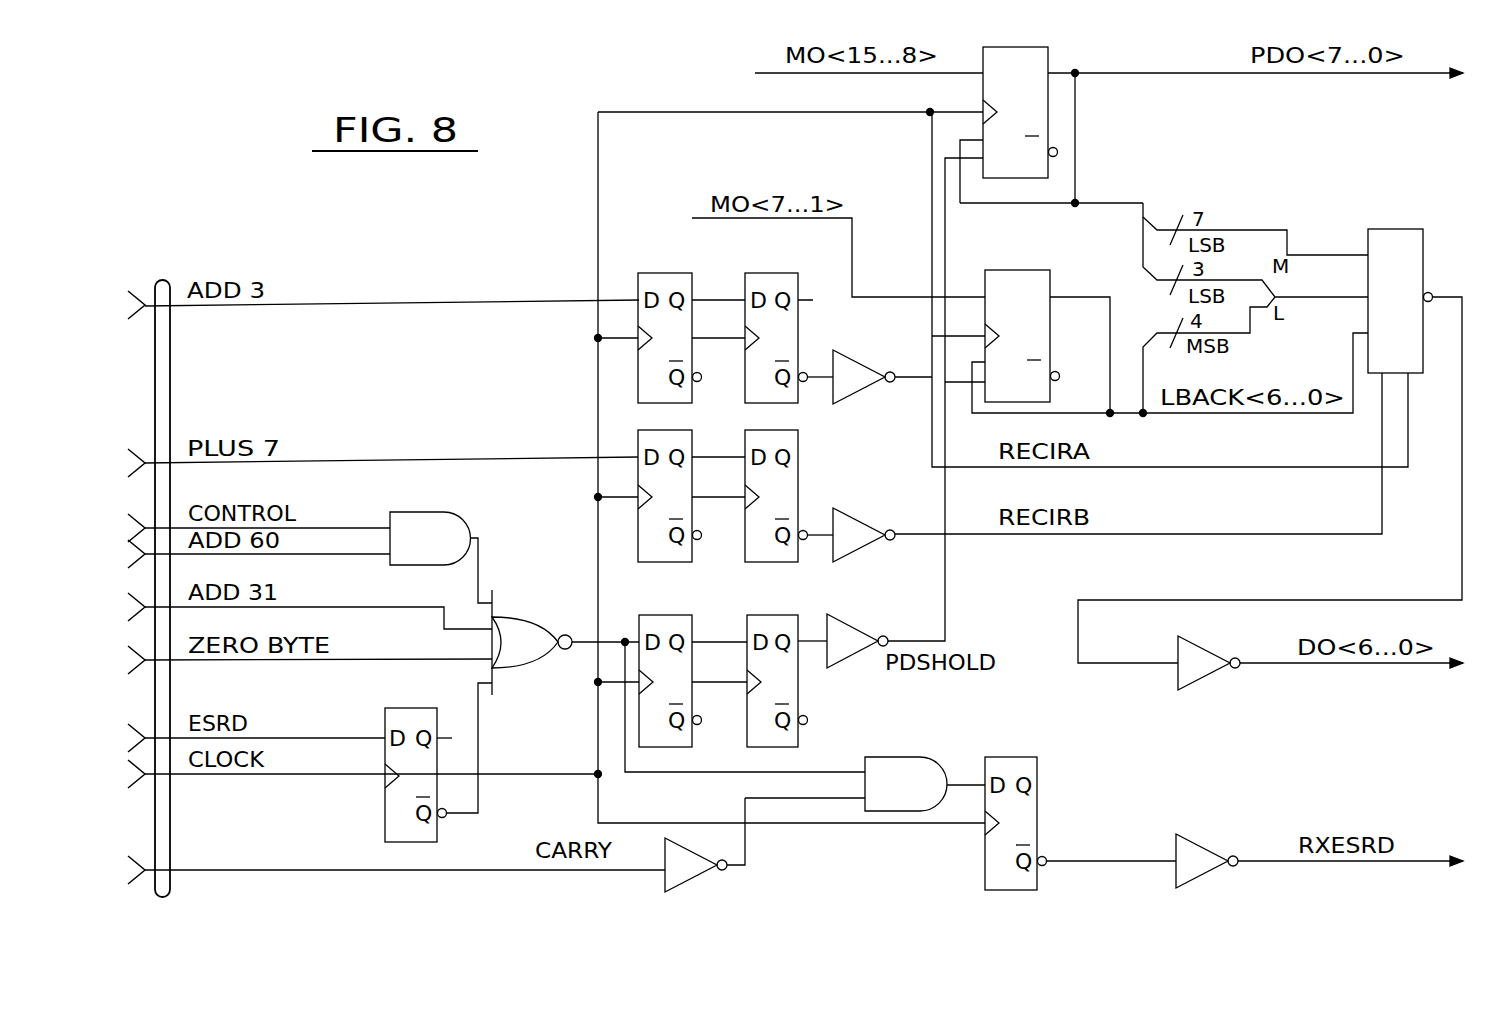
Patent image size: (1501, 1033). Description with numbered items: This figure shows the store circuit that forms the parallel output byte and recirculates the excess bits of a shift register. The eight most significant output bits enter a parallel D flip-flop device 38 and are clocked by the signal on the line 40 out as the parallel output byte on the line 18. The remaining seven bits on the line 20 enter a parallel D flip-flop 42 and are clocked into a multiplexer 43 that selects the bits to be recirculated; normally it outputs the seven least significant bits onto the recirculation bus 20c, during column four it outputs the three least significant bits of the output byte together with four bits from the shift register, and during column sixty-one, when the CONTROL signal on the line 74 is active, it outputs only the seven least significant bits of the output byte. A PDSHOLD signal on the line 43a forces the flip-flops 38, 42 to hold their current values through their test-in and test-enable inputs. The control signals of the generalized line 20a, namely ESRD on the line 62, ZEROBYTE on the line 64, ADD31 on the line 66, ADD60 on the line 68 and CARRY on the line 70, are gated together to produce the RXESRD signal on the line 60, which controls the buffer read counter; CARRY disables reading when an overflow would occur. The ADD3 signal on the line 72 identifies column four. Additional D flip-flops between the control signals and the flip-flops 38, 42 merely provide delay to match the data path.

The recirculation control signal line 20a is at (170, 282).
The ADD3 signal line 72 is at (477, 304).
The CONTROL signal line 74 is at (322, 525).
The ADD60 signal line 68 is at (374, 553).
The ADD31 signal line 66 is at (412, 606).
The ZEROBYTE signal line 64 is at (350, 657).
The ESRD signal line 62 is at (290, 736).
The clock signal line 40 is at (351, 777).
The CARRY signal line 70 is at (202, 869).
The recirculated bits line 20 is at (781, 221).
The parallel D flip-flop device 38 is at (1050, 60).
The parallel output byte line 18 is at (1246, 76).
The parallel D flip-flop 42 is at (995, 269).
The multiplexer 43 is at (1393, 228).
The PDSHOLD signal line 43a is at (945, 614).
The recirculation bus 20c is at (1278, 665).
The RXESRD signal line 60 is at (1408, 859).